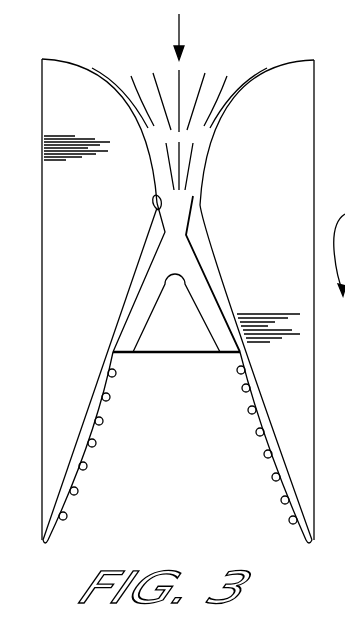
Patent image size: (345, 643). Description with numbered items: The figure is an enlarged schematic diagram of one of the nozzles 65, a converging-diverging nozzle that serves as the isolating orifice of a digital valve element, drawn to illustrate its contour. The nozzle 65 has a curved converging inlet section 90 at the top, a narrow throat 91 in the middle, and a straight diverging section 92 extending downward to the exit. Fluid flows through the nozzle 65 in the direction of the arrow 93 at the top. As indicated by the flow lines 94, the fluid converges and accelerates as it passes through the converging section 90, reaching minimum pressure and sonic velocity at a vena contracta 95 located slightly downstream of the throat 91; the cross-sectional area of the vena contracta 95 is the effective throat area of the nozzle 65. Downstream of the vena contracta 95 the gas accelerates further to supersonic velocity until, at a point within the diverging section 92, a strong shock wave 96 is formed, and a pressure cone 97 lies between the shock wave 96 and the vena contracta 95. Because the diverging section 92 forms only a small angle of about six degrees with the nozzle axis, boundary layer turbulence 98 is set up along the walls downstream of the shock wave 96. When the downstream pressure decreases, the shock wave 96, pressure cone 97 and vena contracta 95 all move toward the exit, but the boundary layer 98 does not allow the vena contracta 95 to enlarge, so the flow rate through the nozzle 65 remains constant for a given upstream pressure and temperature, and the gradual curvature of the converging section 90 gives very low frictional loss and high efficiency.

The nozzle 65 is at (276, 211).
The converging inlet section 90 is at (234, 103).
The throat 91 is at (155, 212).
The diverging section 92 is at (256, 374).
The arrow 93 is at (180, 31).
The flow lines 94 is at (232, 77).
The vena contracta 95 is at (188, 236).
The shock wave 96 is at (153, 358).
The pressure cone 97 is at (148, 321).
The boundary layer turbulence 98 is at (94, 432).